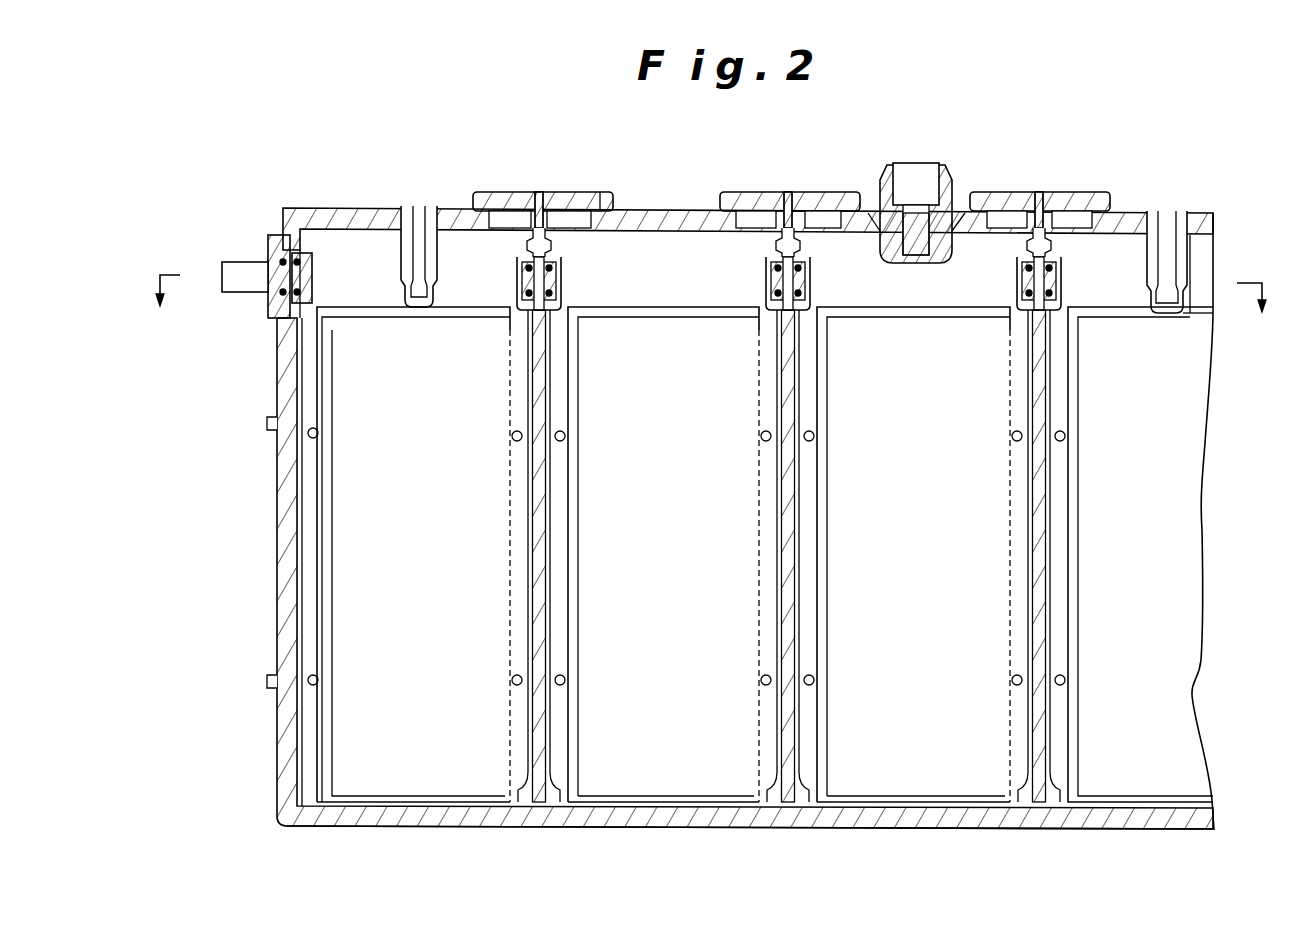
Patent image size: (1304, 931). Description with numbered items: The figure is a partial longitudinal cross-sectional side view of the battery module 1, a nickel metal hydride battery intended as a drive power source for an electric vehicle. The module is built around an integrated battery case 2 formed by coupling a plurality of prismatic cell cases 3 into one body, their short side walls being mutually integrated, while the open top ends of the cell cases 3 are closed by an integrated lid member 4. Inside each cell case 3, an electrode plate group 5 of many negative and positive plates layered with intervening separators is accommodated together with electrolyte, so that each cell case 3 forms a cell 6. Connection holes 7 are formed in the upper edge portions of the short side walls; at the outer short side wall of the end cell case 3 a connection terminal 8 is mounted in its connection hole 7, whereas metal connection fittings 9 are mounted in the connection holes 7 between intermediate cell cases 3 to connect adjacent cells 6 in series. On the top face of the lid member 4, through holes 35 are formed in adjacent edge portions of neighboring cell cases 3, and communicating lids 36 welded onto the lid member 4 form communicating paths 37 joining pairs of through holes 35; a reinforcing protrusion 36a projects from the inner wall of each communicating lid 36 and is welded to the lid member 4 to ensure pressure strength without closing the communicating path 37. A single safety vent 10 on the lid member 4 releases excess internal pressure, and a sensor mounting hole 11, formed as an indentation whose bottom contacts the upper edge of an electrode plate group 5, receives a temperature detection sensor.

The battery module 1 is at (248, 476).
The integrated battery case 2 is at (275, 548).
The cell case 3 is at (388, 824).
The lid member 4 is at (335, 222).
The electrode plate group 5 is at (399, 563).
The cell 6 is at (437, 827).
The connection hole 7 is at (528, 283).
The connection terminal 8 is at (240, 277).
The metal connection fitting 9 is at (555, 290).
The safety vent 10 is at (918, 192).
The sensor mounting hole 11 is at (410, 248).
The through hole 35 is at (510, 228).
The communicating lid 36 is at (500, 202).
The reinforcing protrusion 36a is at (560, 222).
The communicating path 37 is at (532, 210).